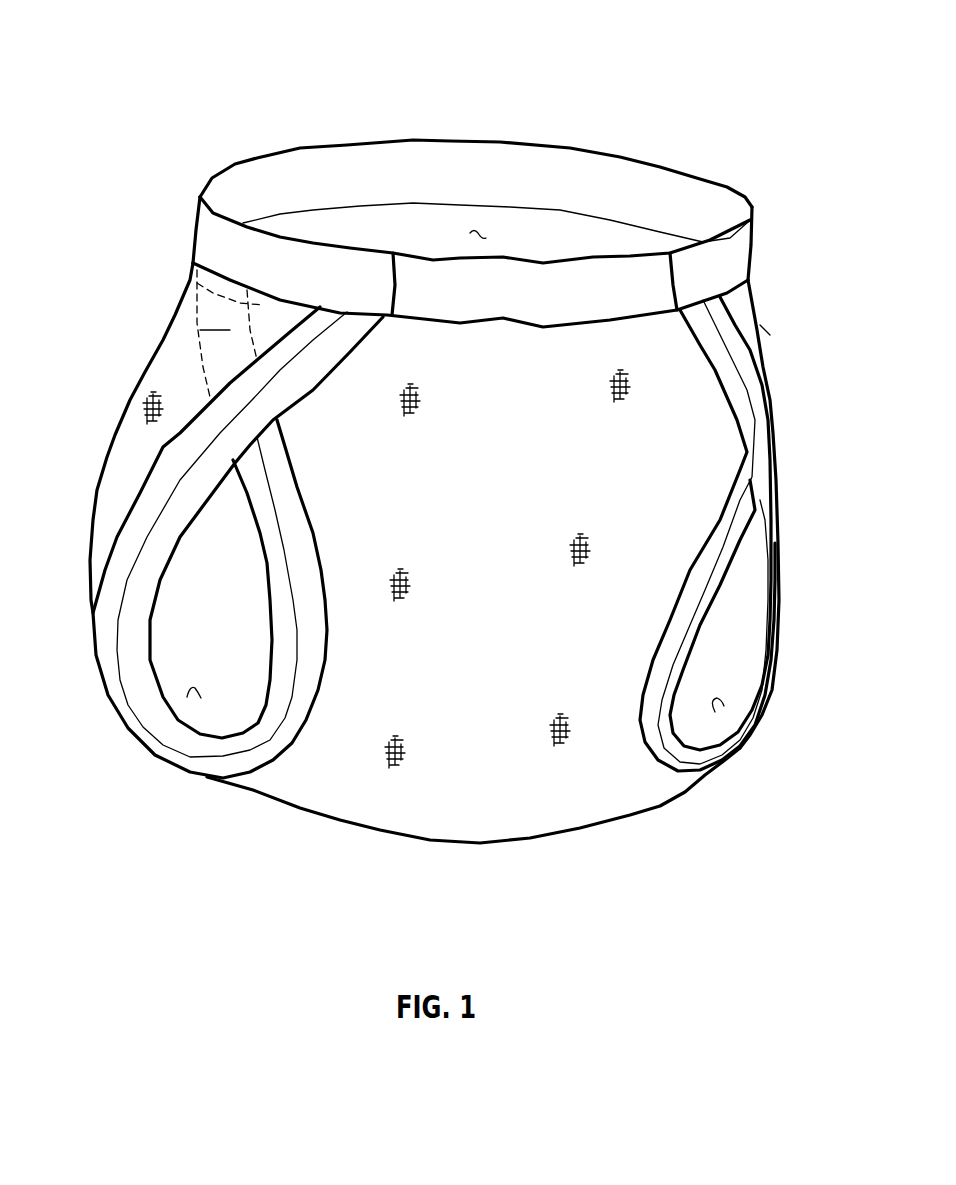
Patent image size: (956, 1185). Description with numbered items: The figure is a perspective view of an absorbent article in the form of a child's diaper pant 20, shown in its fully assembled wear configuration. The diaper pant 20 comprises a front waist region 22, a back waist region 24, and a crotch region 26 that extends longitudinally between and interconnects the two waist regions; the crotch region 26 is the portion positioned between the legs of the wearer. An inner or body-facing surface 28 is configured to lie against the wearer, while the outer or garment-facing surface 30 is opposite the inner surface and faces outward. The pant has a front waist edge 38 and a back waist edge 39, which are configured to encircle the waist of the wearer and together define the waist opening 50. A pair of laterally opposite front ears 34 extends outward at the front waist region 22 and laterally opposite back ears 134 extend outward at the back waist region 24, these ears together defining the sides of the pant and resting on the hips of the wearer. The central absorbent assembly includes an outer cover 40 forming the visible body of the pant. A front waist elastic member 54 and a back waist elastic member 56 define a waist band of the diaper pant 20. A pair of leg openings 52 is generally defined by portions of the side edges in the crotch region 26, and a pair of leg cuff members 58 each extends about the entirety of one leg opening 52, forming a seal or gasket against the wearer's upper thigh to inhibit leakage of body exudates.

The diaper pant 20 is at (547, 60).
The front waist region 22 is at (597, 457).
The back waist region 24 is at (435, 240).
The crotch region 26 is at (513, 822).
The inner surface 28 is at (743, 658).
The outer surface 30 is at (505, 577).
The front ears 34 is at (197, 283).
The back ears 134 is at (273, 328).
The front waist edge 38 is at (560, 257).
The back waist edge 39 is at (327, 143).
The outer cover 40 is at (115, 478).
The waist opening 50 is at (478, 233).
The leg openings 52 is at (187, 697).
The front waist elastic member 54 is at (420, 277).
The back waist elastic member 56 is at (247, 190).
The leg cuff members 58 is at (253, 760).